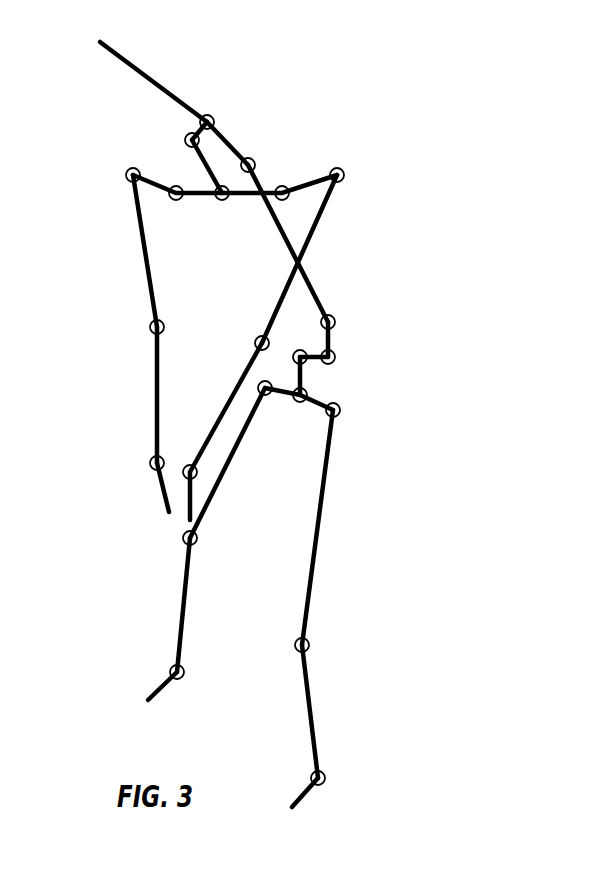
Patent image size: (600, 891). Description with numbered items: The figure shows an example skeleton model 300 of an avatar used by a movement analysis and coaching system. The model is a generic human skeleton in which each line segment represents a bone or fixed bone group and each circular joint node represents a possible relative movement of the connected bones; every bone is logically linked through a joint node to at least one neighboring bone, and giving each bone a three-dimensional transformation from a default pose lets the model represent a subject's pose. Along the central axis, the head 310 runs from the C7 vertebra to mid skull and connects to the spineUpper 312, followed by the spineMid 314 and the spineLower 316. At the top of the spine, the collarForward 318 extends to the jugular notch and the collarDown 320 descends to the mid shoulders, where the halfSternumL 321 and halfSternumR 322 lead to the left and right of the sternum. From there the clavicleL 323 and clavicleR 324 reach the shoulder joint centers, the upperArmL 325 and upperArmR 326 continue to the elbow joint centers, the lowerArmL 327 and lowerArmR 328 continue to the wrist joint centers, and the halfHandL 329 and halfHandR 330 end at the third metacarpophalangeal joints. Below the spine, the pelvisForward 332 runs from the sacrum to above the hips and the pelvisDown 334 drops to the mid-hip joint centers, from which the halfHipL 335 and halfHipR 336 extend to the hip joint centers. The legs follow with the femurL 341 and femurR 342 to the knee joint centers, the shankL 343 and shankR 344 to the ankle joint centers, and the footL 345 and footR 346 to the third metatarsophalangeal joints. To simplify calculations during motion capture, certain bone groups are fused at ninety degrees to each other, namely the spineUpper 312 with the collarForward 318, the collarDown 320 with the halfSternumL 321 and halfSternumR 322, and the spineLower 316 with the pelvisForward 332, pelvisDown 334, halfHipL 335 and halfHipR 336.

The skeleton model 300 is at (390, 103).
The head bone 310 is at (152, 83).
The spineUpper bone 312 is at (231, 146).
The spineMid bone 314 is at (312, 290).
The spineLower bone 316 is at (345, 326).
The collarForward bone 318 is at (200, 121).
The collarDown bone 320 is at (200, 170).
The halfSternumL bone 321 is at (246, 200).
The halfSternumR bone 322 is at (186, 200).
The clavicleL bone 323 is at (306, 181).
The clavicleR bone 324 is at (150, 187).
The upperArmL bone 325 is at (276, 290).
The upperArmR bone 326 is at (140, 250).
The lowerArmL bone 327 is at (232, 388).
The lowerArmR bone 328 is at (152, 388).
The halfHandL bone 329 is at (187, 517).
The halfHandR bone 330 is at (162, 487).
The pelvisForward bone 332 is at (318, 360).
The pelvisDown bone 334 is at (295, 372).
The halfHipL bone 335 is at (320, 402).
The halfHipR bone 336 is at (275, 397).
The femurL bone 341 is at (310, 568).
The femurR bone 342 is at (232, 478).
The shankL bone 343 is at (308, 722).
The shankR bone 344 is at (188, 590).
The footL bone 345 is at (309, 791).
The footR bone 346 is at (166, 679).